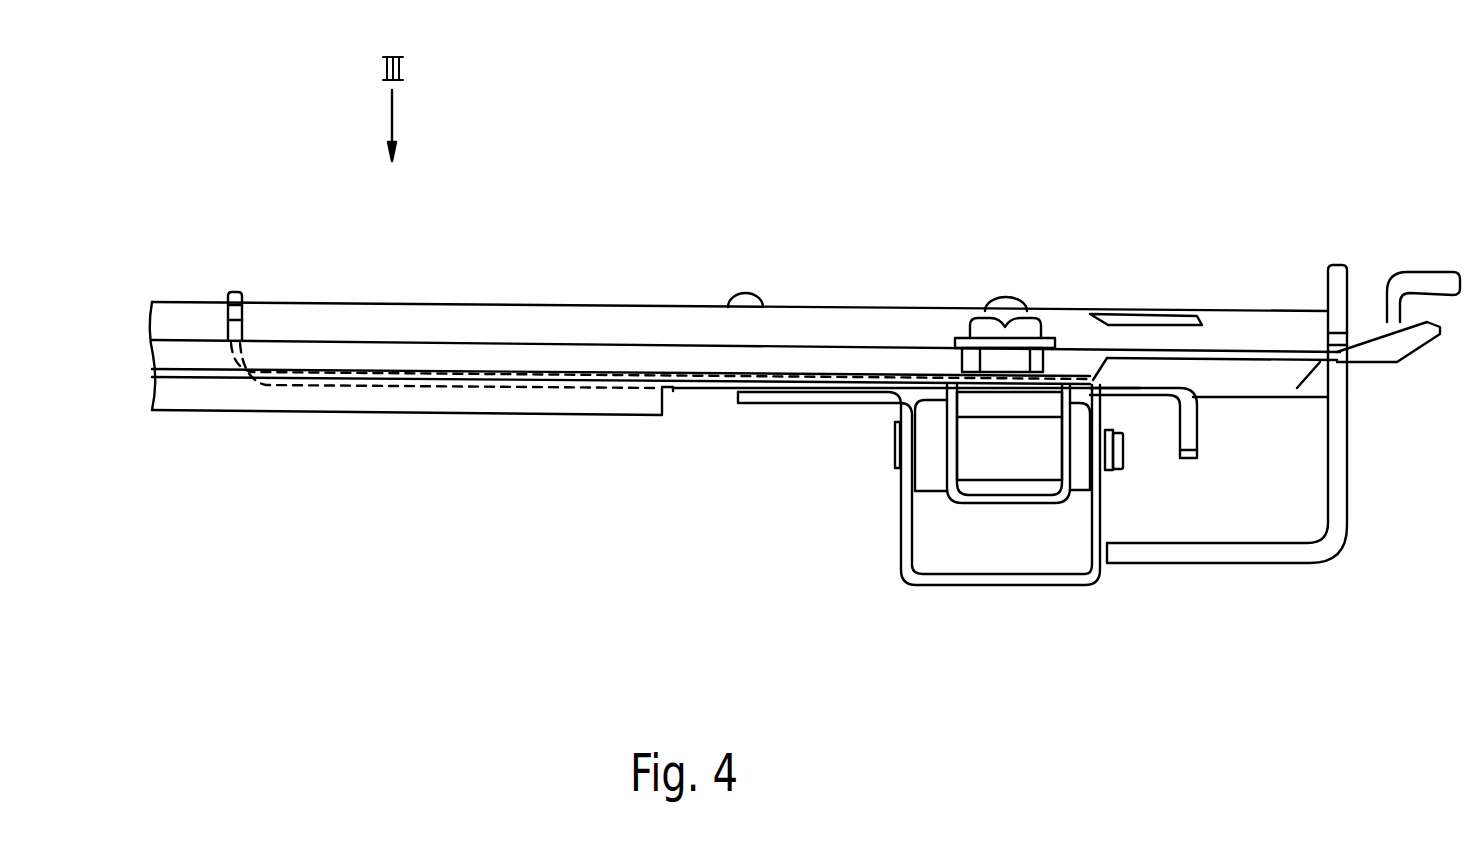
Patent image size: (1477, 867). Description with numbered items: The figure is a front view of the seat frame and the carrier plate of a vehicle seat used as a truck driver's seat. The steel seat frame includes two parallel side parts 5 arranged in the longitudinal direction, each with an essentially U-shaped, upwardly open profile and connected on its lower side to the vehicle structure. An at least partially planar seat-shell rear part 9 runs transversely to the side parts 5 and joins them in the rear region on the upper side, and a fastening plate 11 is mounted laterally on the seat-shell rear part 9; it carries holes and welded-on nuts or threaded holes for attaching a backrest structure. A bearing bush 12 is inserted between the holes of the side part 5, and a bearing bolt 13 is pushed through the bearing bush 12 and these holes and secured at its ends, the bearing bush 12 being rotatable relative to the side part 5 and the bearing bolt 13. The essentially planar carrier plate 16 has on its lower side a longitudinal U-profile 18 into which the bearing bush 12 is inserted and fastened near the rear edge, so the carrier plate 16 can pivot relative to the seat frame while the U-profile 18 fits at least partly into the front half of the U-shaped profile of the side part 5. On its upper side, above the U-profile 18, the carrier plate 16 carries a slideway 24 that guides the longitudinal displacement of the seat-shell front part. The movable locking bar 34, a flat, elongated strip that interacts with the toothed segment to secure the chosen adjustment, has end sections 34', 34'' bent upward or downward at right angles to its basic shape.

The side part 5 is at (902, 553).
The seat-shell rear part 9 is at (835, 335).
The fastening plate 11 is at (1335, 500).
The bearing bush 12 is at (975, 452).
The bearing bolt 13 is at (1123, 462).
The carrier plate 16 is at (650, 360).
The U-profile 18 is at (1000, 498).
The slideway 24 is at (992, 333).
The locking bar 34 is at (660, 460).
The end section of locking bar 34' is at (267, 263).
The end section of locking bar 34'' is at (1194, 431).